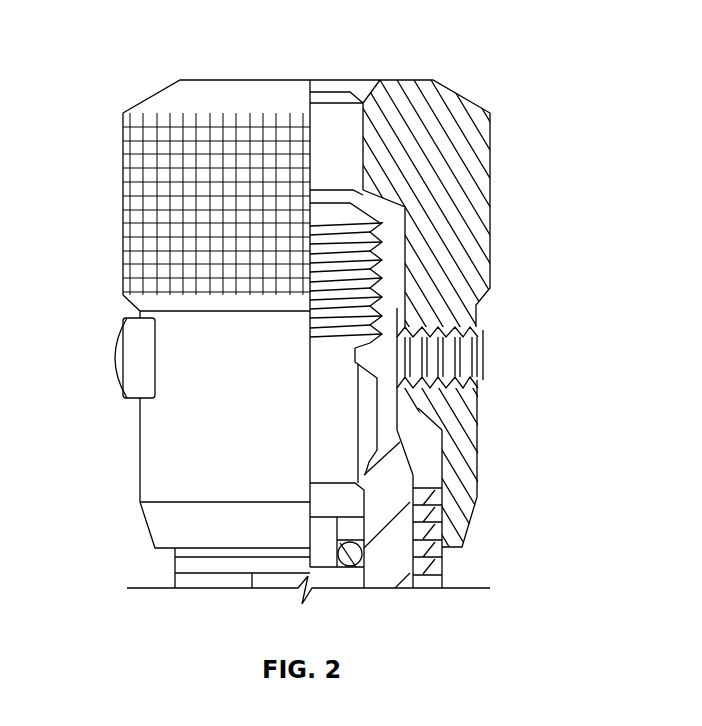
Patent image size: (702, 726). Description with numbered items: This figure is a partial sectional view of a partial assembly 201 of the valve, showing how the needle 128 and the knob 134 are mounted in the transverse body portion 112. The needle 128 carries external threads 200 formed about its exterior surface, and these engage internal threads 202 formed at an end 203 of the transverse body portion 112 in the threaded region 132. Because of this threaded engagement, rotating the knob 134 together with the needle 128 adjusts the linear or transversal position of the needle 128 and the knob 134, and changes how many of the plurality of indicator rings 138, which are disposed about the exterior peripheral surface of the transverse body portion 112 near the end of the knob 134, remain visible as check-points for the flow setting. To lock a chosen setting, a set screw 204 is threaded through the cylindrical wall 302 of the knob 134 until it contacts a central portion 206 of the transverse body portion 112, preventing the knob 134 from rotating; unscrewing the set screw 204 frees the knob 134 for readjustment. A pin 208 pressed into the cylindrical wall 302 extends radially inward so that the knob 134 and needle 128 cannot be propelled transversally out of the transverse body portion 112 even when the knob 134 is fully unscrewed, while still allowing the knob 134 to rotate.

The partial assembly 201 is at (197, 42).
The needle 128 is at (333, 87).
The knob 134 is at (415, 77).
The external threads 200 is at (390, 218).
The end 203 is at (390, 258).
The threaded region 132 is at (387, 281).
The set screw 204 is at (482, 347).
The central portion 206 is at (390, 407).
The cylindrical wall 302 is at (460, 458).
The indicator rings 138 is at (437, 565).
The internal threads 202 is at (368, 292).
The pin 208 is at (128, 330).
The transverse body portion 112 is at (377, 404).